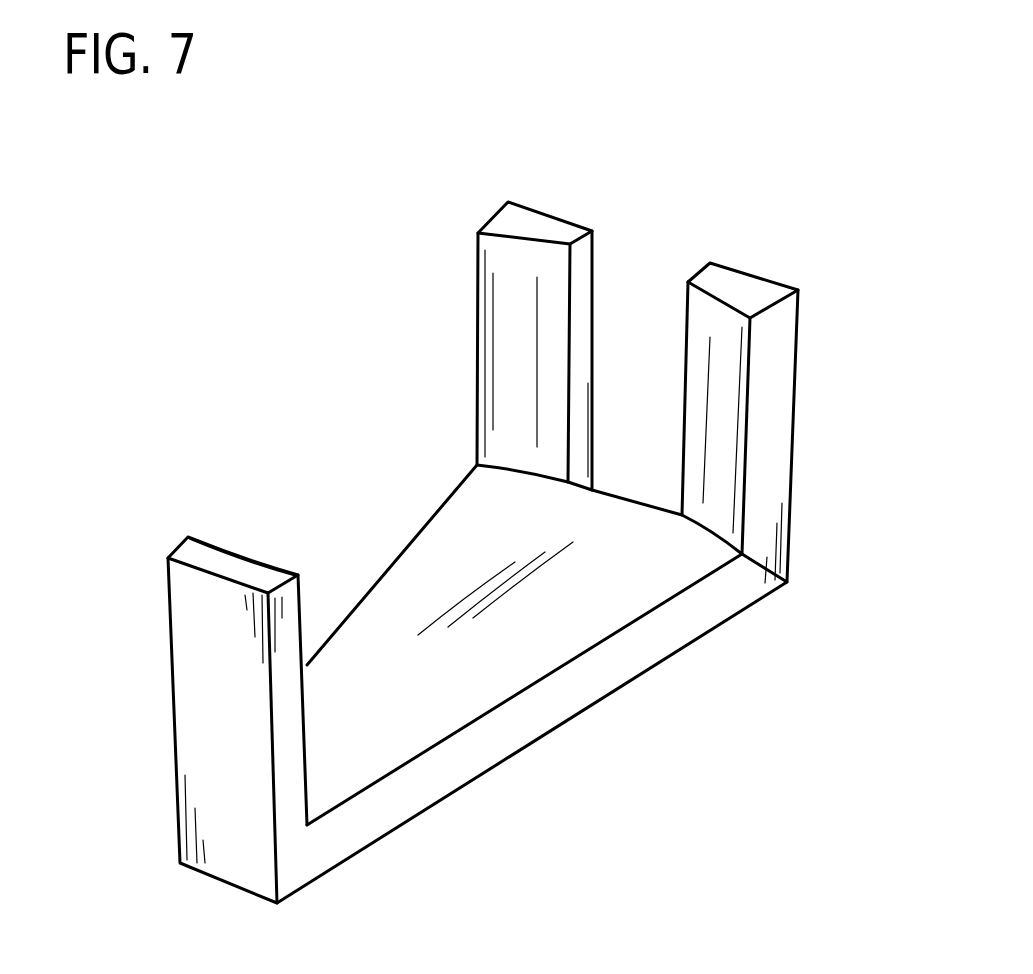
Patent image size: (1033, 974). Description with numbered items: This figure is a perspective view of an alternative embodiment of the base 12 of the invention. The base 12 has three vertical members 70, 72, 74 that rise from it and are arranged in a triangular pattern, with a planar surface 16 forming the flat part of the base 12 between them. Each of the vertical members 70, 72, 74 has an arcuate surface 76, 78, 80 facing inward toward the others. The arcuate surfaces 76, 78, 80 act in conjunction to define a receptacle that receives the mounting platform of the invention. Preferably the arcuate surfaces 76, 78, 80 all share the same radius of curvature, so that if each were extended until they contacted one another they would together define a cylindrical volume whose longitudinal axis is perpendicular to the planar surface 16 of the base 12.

The base 12 is at (672, 630).
The planar surface 16 is at (457, 780).
The vertical member 70 is at (510, 220).
The vertical member 72 is at (755, 287).
The vertical member 74 is at (188, 553).
The arcuate surface 76 is at (500, 297).
The arcuate surface 78 is at (720, 397).
The arcuate surface 80 is at (248, 558).